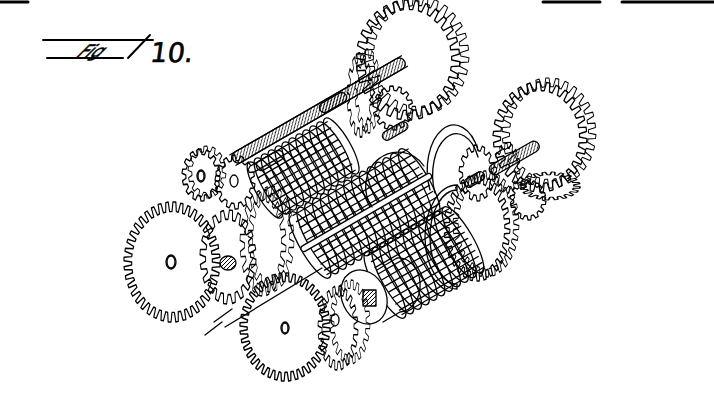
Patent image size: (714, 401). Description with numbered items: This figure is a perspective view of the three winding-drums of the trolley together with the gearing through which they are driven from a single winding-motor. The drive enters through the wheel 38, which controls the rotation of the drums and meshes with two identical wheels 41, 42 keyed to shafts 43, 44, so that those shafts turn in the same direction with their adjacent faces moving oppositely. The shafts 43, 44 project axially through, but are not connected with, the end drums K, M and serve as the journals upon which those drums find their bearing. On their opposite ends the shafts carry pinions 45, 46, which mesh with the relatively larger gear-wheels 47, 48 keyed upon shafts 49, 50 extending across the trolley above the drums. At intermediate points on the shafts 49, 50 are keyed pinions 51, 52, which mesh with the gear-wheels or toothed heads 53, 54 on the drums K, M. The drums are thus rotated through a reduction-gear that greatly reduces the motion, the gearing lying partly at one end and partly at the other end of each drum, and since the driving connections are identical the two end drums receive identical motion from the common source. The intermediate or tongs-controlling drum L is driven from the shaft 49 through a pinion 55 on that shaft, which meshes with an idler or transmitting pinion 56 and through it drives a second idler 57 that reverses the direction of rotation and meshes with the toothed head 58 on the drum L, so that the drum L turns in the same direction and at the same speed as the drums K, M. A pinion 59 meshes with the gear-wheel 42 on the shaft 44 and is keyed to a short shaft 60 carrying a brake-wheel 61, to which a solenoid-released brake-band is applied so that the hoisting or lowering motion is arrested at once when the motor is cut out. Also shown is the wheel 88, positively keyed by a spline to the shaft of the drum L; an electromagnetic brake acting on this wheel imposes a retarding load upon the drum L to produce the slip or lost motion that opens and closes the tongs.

The wheel 38 is at (261, 305).
The wheel 41 is at (172, 262).
The wheel 42 is at (285, 327).
The shaft 43 is at (167, 265).
The shaft 44 is at (285, 332).
The pinion 45 is at (420, 130).
The pinion 46 is at (545, 213).
The gear-wheel 47 is at (412, 60).
The gear-wheel 48 is at (544, 135).
The shaft 49 is at (298, 114).
The shaft 50 is at (523, 143).
The pinion 51 is at (352, 100).
The pinion 52 is at (520, 180).
The gear-wheel 53 is at (280, 112).
The gear-wheel 54 is at (505, 270).
The pinion 55 is at (193, 155).
The idler pinion 56 is at (187, 170).
The second idler 57 is at (207, 207).
The toothed head 58 is at (197, 240).
The pinion 59 is at (375, 325).
The short shaft 60 is at (340, 327).
The brake-wheel 61 is at (392, 303).
The wheel 88 is at (437, 156).
The drum K is at (275, 125).
The controlling-drum L is at (212, 344).
The drum M is at (446, 282).